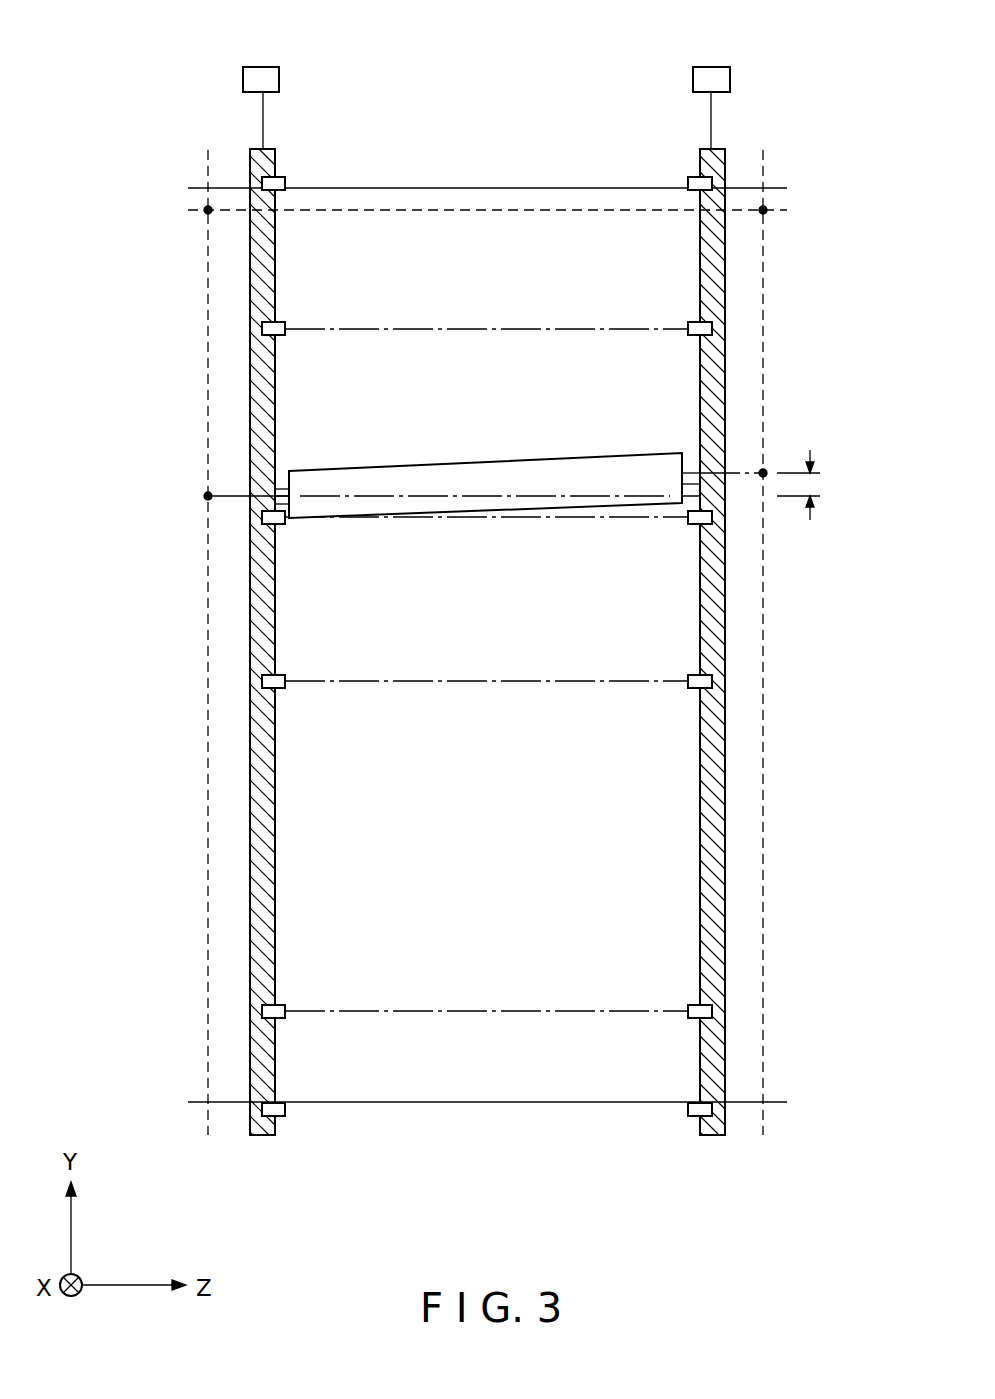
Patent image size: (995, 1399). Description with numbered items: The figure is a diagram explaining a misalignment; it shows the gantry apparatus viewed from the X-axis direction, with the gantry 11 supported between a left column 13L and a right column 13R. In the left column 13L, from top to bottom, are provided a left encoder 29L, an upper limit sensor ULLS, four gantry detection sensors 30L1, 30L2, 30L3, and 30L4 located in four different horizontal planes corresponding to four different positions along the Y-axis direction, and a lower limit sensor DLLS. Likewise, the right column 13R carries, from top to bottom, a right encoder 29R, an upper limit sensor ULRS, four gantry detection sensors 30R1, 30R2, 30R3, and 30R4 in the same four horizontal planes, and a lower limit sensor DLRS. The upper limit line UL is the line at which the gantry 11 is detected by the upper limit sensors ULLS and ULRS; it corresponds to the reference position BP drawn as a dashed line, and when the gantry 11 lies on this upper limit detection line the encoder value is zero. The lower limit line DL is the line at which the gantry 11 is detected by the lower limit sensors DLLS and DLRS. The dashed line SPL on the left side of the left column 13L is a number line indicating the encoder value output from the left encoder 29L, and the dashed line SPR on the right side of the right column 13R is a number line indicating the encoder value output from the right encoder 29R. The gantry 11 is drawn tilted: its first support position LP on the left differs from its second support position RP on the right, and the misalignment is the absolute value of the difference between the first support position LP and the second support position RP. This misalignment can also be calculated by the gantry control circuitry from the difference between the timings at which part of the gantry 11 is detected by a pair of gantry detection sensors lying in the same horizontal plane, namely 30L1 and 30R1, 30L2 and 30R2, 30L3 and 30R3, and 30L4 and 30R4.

The gantry 11 is at (495, 460).
The left column 13L is at (262, 1137).
The right column 13R is at (714, 1137).
The left encoder 29L is at (263, 66).
The right encoder 29R is at (712, 66).
The gantry detection sensor 30L1 is at (280, 320).
The gantry detection sensor 30L2 is at (280, 526).
The gantry detection sensor 30L3 is at (280, 690).
The gantry detection sensor 30L4 is at (280, 1020).
The gantry detection sensor 30R1 is at (694, 320).
The gantry detection sensor 30R2 is at (694, 526).
The gantry detection sensor 30R3 is at (694, 690).
The gantry detection sensor 30R4 is at (694, 1020).
The upper limit sensor ULLS is at (280, 176).
The upper limit sensor ULRS is at (694, 176).
The lower limit sensor DLLS is at (280, 1118).
The lower limit sensor DLRS is at (694, 1118).
The dashed line (number line) SPL is at (203, 630).
The dashed line (number line) SPR is at (764, 630).
The upper limit line UL is at (469, 189).
The lower limit line DL is at (469, 1104).
The reference position BP is at (469, 212).
The first support position LP is at (205, 496).
The second support position RP is at (765, 468).